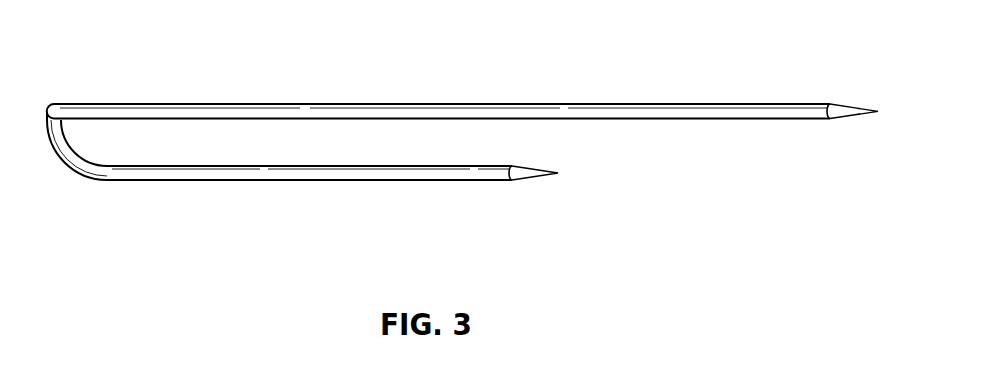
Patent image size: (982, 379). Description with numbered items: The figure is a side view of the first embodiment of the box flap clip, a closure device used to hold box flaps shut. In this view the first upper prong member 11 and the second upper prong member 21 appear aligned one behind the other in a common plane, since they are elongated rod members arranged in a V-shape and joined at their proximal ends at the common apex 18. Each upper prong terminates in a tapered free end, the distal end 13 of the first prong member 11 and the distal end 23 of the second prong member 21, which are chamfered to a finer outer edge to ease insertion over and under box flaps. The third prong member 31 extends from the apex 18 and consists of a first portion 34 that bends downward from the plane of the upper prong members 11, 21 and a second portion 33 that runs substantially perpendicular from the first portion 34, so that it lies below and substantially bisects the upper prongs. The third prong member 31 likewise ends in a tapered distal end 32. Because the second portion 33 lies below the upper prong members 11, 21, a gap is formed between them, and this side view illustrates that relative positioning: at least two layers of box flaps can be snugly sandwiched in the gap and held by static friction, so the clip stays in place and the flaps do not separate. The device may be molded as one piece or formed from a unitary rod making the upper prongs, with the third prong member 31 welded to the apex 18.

The first upper prong member 11 is at (744, 77).
The second upper prong member 21 is at (573, 77).
The apex 18 is at (56, 104).
The distal end of second prong member 23 is at (850, 110).
The distal end of first prong member 13 is at (856, 110).
The third prong member 31 is at (287, 196).
The first portion 34 is at (53, 148).
The second portion 33 is at (403, 181).
The distal end of third prong member 32 is at (520, 174).